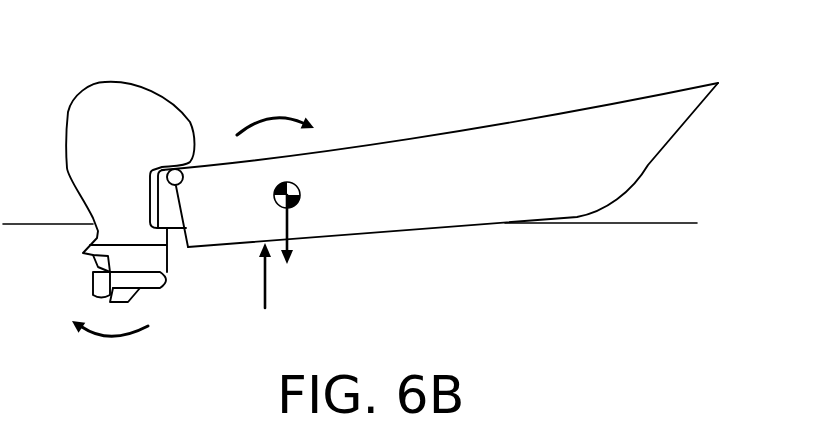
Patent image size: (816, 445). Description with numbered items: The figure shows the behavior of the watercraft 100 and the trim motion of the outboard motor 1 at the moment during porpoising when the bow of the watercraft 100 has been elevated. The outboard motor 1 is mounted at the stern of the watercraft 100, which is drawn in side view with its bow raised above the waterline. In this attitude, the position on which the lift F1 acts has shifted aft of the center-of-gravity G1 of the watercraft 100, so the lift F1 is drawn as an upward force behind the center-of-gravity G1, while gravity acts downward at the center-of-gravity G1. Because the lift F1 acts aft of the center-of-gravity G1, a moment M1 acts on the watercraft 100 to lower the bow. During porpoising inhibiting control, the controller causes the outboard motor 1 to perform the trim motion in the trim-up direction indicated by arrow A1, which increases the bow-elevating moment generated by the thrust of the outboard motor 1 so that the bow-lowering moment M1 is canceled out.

The outboard motor 1 is at (127, 82).
The watercraft 100 is at (517, 128).
The center-of-gravity G1 is at (294, 203).
The lift F1 is at (263, 298).
The moment M1 is at (277, 116).
The arrow A1 is at (105, 338).